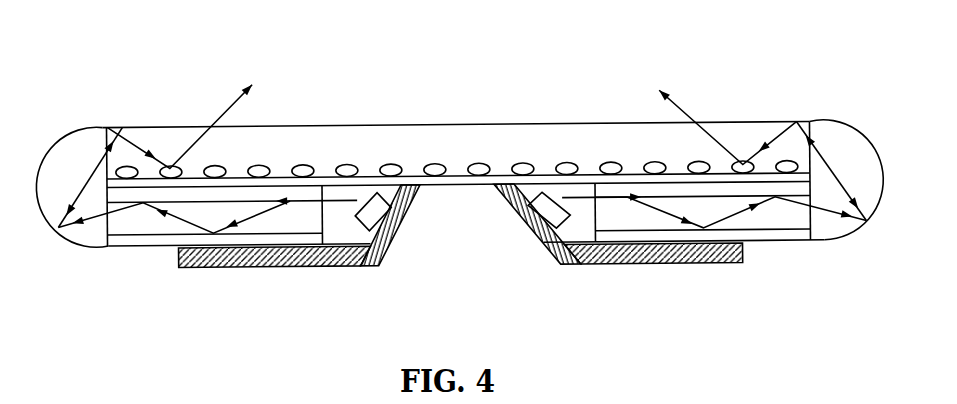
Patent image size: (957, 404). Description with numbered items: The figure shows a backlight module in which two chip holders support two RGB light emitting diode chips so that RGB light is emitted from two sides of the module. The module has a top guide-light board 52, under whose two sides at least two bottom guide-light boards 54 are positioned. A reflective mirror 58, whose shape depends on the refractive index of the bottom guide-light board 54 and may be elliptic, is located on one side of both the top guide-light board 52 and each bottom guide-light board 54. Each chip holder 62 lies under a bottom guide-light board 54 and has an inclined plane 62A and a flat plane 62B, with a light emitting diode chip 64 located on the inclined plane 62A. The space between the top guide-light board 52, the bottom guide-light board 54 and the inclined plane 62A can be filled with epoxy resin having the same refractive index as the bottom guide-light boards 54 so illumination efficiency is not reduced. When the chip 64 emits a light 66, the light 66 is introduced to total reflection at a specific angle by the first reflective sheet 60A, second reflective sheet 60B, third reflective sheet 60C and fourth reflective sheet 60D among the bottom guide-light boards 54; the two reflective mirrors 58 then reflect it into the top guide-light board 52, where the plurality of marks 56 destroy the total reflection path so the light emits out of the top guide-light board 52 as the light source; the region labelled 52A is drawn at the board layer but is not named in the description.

The top guide-light board 52 is at (517, 144).
The light source mounting layer 52A is at (327, 182).
The bottom guide-light board 54 is at (658, 220).
The marks 56 is at (392, 163).
The reflective mirror 58 is at (870, 148).
The first reflective sheet 60A is at (655, 194).
The second reflective sheet 60B is at (782, 238).
The third reflective sheet 60C is at (172, 194).
The fourth reflective sheet 60D is at (178, 241).
The chip holder 62 is at (545, 255).
The inclined plane 62A is at (541, 238).
The flat plane 62B is at (573, 265).
The light emitting diode chip 64 is at (540, 208).
The light 66 is at (226, 104).